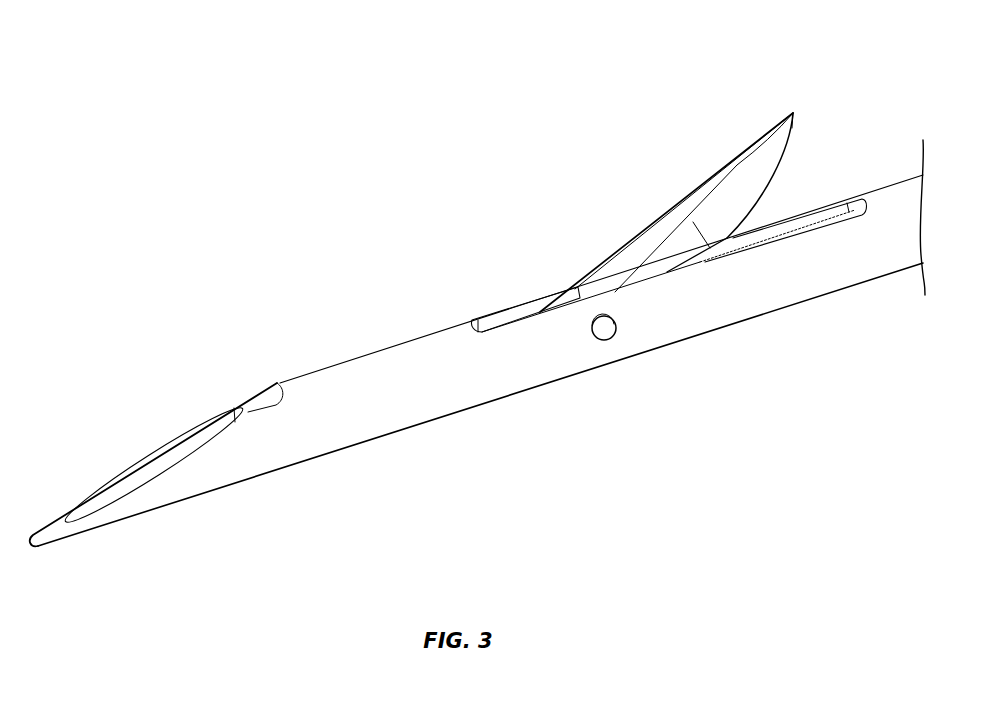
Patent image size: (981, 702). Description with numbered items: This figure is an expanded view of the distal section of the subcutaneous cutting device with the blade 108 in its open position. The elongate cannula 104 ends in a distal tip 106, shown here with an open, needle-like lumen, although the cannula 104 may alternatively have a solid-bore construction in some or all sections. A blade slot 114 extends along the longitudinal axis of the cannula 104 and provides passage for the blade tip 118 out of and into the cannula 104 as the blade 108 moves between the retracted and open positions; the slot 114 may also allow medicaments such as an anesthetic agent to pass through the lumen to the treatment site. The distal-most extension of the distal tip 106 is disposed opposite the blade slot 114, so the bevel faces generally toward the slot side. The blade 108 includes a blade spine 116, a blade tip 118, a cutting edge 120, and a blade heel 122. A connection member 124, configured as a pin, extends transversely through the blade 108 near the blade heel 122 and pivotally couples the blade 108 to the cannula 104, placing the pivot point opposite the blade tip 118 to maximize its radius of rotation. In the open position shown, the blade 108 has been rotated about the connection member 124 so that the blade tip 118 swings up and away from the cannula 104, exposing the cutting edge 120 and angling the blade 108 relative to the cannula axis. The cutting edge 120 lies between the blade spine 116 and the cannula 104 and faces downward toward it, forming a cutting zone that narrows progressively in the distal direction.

The cannula 104 is at (782, 275).
The distal tip 106 is at (40, 530).
The blade 108 is at (711, 165).
The blade slot 114 is at (498, 320).
The blade spine 116 is at (655, 227).
The blade tip 118 is at (795, 118).
The cutting edge 120 is at (767, 185).
The blade heel 122 is at (548, 310).
The connection member 124 is at (603, 333).